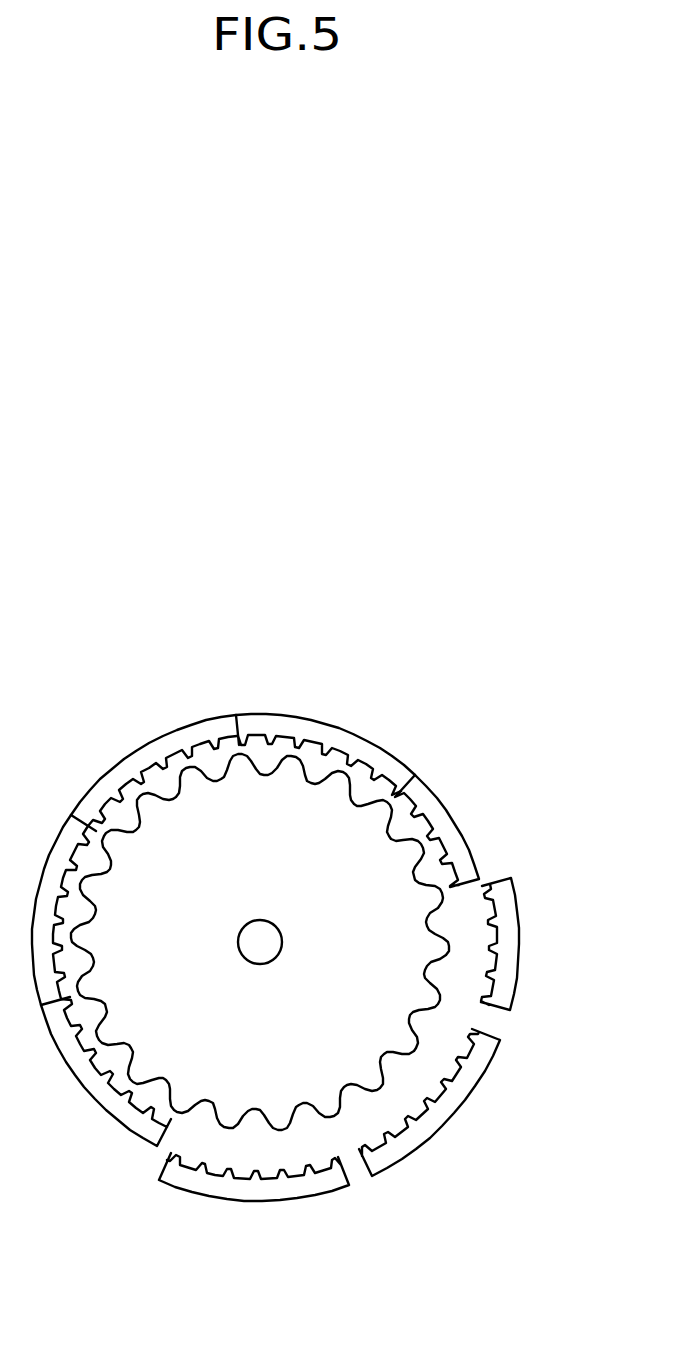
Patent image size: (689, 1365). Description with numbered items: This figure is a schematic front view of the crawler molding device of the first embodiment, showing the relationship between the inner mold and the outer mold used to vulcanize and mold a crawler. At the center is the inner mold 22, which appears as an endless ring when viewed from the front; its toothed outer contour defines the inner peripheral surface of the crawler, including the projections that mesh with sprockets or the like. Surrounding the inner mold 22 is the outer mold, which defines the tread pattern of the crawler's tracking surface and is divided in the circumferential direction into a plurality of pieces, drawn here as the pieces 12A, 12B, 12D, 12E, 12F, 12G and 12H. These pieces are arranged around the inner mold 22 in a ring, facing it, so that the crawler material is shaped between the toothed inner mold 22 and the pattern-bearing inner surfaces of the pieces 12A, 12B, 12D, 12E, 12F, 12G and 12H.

The inner mold 22 is at (307, 813).
The piece 12A is at (168, 740).
The piece 12B is at (62, 847).
The piece 12D is at (88, 1080).
The piece 12E is at (448, 1113).
The piece 12F is at (514, 923).
The piece 12G is at (442, 803).
The piece 12H is at (358, 748).